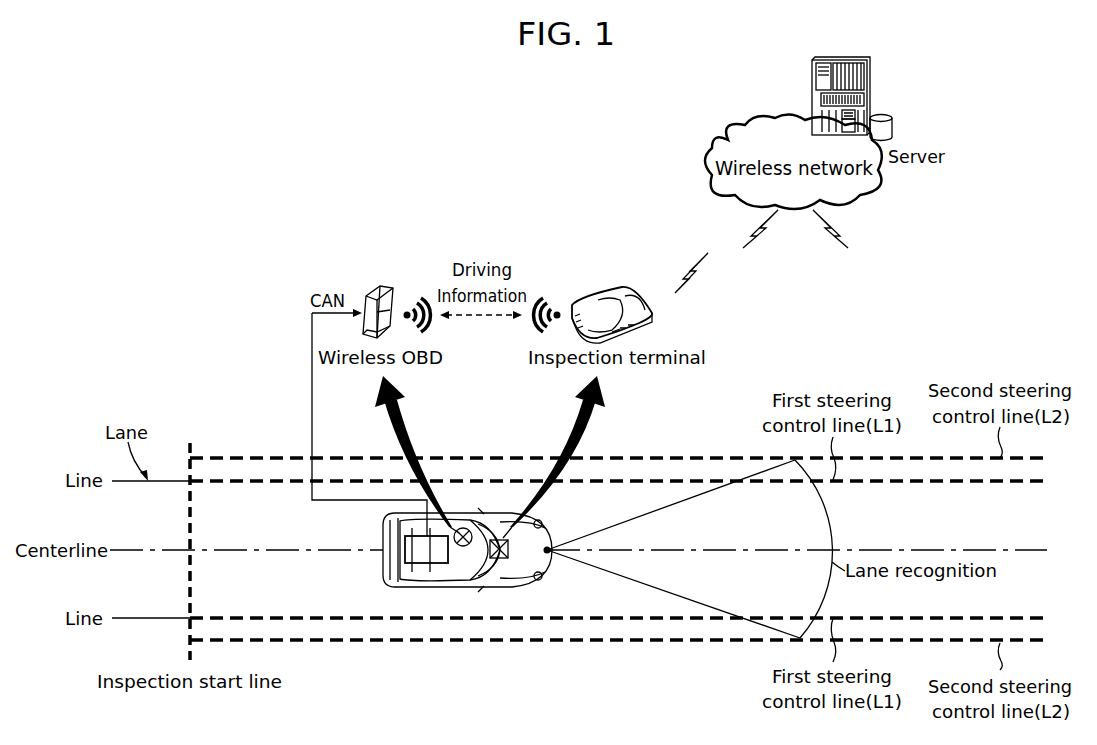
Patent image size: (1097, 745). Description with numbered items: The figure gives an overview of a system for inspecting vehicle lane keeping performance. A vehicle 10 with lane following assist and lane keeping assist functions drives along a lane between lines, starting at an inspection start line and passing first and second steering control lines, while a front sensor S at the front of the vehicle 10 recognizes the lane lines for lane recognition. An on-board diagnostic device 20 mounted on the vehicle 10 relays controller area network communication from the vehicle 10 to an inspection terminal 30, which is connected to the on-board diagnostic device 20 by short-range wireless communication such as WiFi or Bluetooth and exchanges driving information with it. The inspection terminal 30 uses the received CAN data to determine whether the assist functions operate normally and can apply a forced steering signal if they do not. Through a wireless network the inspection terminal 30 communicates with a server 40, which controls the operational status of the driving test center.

The vehicle 10 is at (385, 546).
The on-board diagnostic device 20 is at (382, 283).
The inspection terminal 30 is at (590, 300).
The server 40 is at (812, 88).
The front sensor S is at (548, 550).